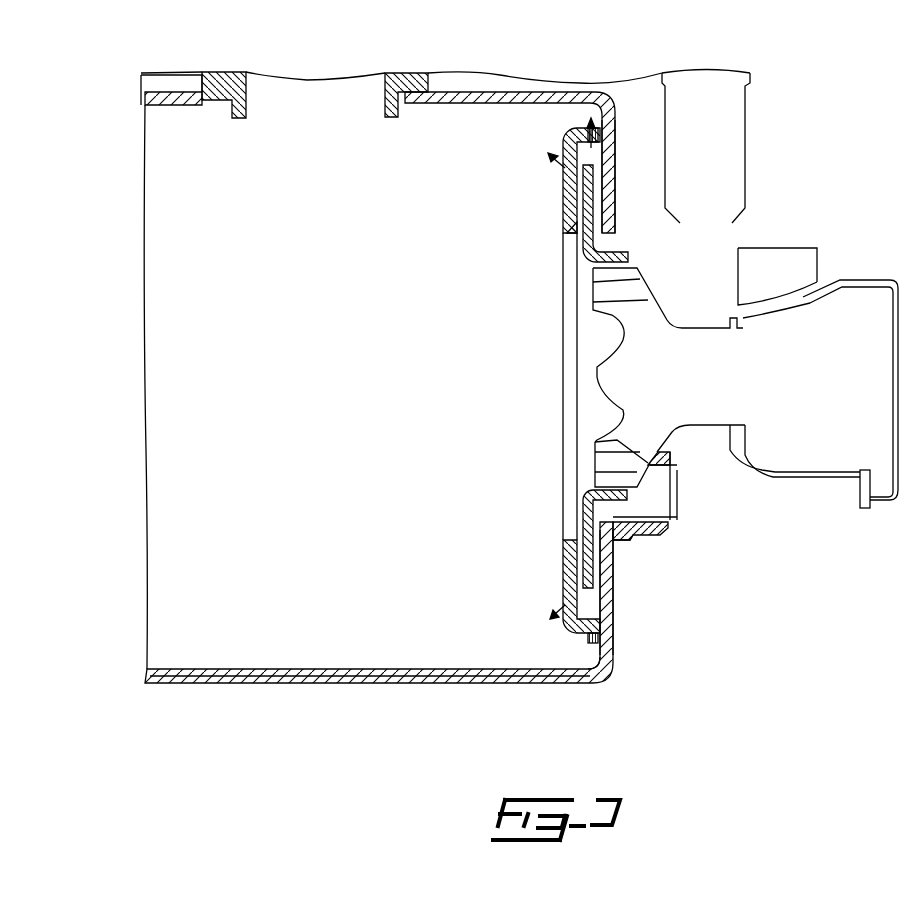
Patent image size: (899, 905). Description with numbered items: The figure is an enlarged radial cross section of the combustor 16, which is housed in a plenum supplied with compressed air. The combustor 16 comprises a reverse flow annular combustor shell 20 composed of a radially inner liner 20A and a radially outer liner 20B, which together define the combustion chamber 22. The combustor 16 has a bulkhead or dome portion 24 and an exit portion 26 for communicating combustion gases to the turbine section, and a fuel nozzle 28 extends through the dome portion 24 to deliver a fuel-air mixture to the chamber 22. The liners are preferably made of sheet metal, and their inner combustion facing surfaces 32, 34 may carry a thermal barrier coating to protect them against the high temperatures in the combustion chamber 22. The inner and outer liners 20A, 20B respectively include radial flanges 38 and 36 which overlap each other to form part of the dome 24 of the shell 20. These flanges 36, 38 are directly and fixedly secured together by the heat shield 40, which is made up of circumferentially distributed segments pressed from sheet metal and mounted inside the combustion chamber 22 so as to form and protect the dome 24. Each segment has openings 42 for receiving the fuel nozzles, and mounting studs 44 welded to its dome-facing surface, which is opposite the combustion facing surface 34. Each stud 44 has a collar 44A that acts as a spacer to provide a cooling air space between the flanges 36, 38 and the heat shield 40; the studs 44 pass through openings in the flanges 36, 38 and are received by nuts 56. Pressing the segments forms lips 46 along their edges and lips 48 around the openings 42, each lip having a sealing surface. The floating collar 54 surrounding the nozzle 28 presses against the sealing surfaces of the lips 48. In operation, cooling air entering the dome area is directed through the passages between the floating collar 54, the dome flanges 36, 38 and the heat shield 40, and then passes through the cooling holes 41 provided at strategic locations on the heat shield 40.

The combustor 16 is at (630, 692).
The combustor shell 20 is at (403, 395).
The radially inner liner 20A is at (440, 683).
The radially outer liner 20B is at (513, 105).
The combustion chamber 22 is at (447, 342).
The dome portion 24 is at (612, 208).
The exit portion 26 is at (192, 481).
The fuel nozzle 28 is at (695, 427).
The inner combustion facing surface 32 is at (387, 668).
The inner combustion facing surface 34 is at (188, 107).
The radial flange 36 is at (615, 617).
The radial flange 38 is at (617, 157).
The heat shield 40 is at (556, 558).
The cooling holes 41 is at (585, 129).
The openings 42 is at (563, 535).
The mounting studs 44 is at (660, 510).
The collar 44A is at (585, 477).
The lips 46 is at (600, 132).
The lips 48 is at (572, 232).
The floating collar 54 is at (590, 268).
The nuts 56 is at (650, 537).